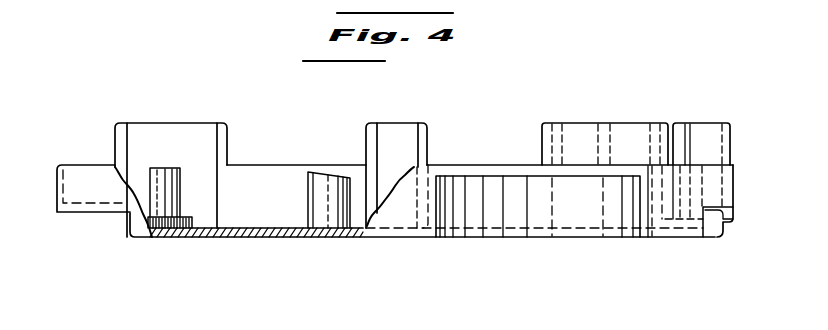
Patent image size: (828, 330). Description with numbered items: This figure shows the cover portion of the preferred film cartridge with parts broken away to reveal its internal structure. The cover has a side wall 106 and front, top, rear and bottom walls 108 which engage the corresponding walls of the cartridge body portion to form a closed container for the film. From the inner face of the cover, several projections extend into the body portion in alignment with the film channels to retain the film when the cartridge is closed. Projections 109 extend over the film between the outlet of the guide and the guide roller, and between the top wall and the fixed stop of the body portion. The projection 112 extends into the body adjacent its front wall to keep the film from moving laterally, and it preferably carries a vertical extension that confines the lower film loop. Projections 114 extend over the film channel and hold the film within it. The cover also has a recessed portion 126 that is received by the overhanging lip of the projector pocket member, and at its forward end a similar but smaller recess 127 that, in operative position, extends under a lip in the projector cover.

The side wall 106 is at (262, 237).
The front, top, rear and bottom walls 108 is at (734, 187).
The projections 109 is at (626, 132).
The projection 112 is at (707, 134).
The projections 114 is at (180, 142).
The recessed portion 126 is at (82, 213).
The recess 127 is at (728, 225).